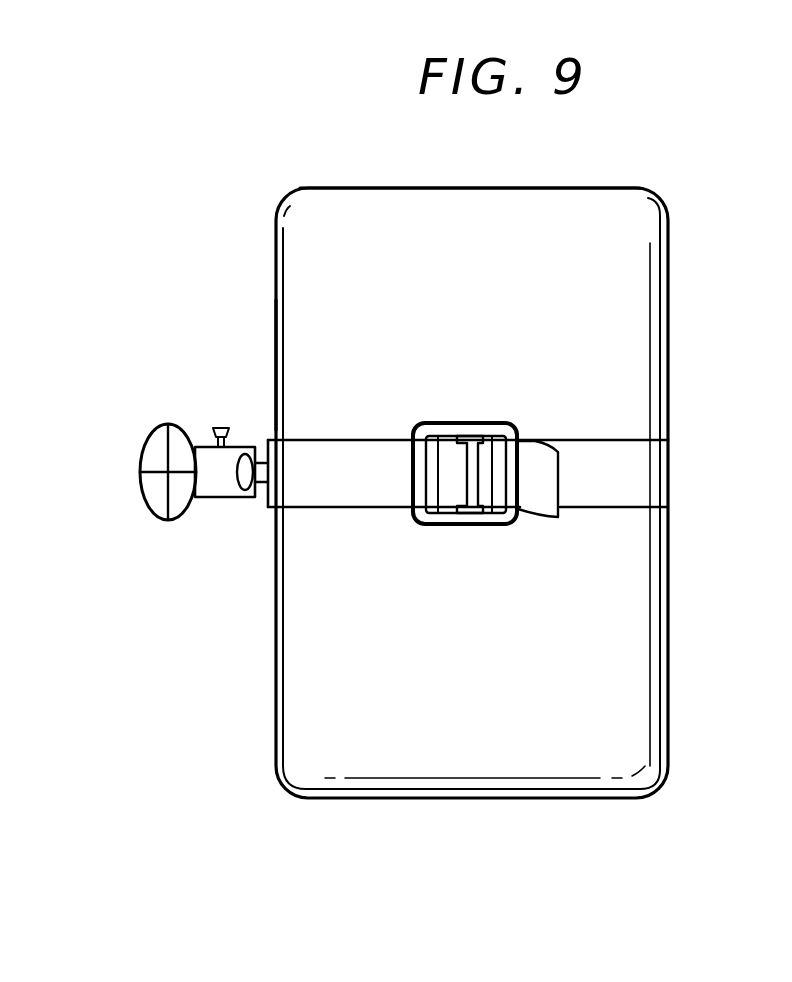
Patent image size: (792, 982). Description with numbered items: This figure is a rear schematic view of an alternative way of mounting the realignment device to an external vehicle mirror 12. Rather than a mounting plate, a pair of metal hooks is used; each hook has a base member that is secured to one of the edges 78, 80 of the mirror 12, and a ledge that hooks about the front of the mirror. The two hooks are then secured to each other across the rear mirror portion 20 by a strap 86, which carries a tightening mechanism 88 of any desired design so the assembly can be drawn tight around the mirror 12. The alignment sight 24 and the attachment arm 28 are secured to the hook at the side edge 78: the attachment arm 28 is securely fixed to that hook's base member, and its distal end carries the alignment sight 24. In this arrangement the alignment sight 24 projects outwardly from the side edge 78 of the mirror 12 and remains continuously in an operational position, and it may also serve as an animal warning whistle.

The mirror 12 is at (541, 187).
The rear mirror portion 20 is at (481, 308).
The alignment sight 24 is at (148, 511).
The attachment arm 28 is at (258, 490).
The side edge 78 is at (276, 365).
The edge 80 is at (668, 306).
The strap 86 is at (585, 493).
The tightening mechanism 88 is at (450, 514).